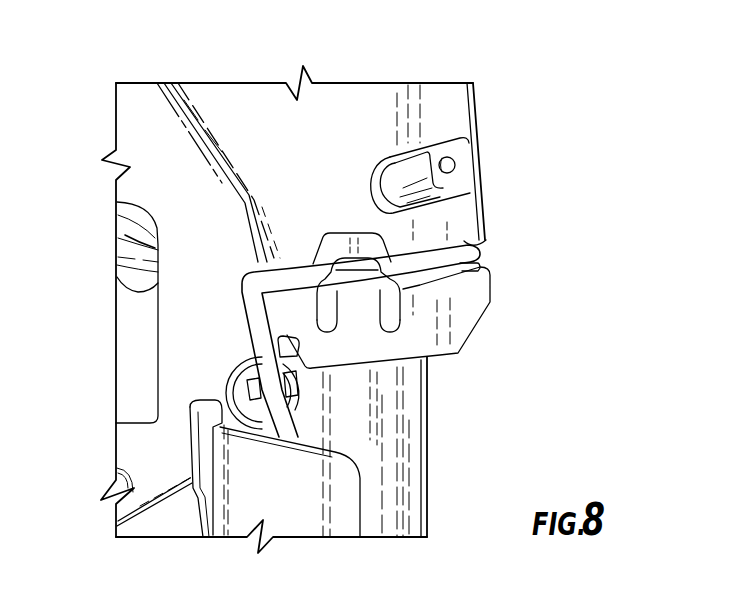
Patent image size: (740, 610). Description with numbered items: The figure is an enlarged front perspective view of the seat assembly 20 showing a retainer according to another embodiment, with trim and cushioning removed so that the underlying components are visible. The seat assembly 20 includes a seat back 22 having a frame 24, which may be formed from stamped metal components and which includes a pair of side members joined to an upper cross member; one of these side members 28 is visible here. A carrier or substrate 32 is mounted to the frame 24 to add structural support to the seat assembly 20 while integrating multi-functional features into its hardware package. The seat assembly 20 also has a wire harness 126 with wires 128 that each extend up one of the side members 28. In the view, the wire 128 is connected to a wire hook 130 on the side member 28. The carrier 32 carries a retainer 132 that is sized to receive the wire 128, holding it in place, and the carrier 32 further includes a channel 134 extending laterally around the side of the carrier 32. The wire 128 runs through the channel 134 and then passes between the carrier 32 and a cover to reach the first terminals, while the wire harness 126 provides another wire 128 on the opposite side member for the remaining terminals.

The seat assembly 20 is at (560, 121).
The seat back 22 is at (578, 235).
The frame 24 is at (432, 455).
The side member 28 is at (413, 522).
The carrier 32 is at (148, 147).
The wire harness 126 is at (305, 414).
The wire 128 is at (265, 331).
The wire hook 130 is at (253, 397).
The retainer 132 is at (343, 270).
The channel 134 is at (423, 270).